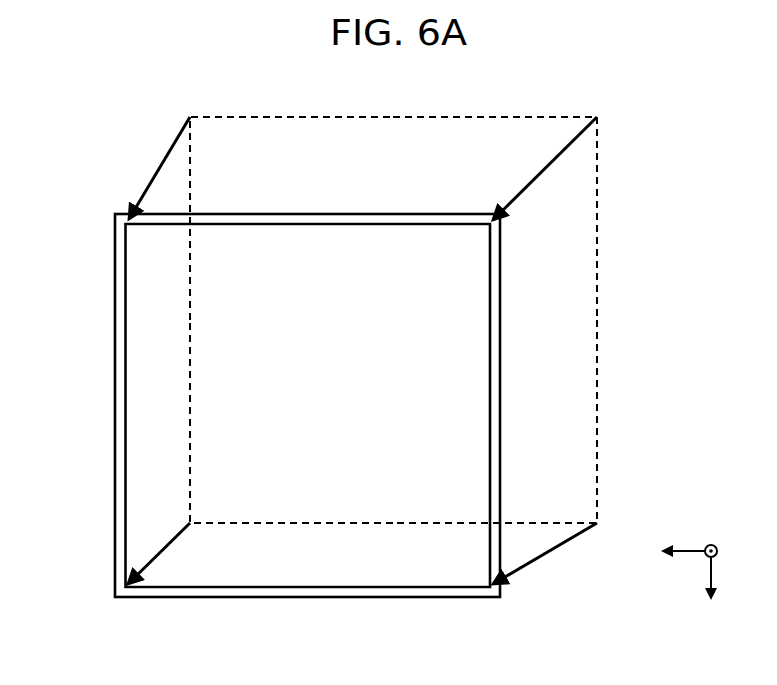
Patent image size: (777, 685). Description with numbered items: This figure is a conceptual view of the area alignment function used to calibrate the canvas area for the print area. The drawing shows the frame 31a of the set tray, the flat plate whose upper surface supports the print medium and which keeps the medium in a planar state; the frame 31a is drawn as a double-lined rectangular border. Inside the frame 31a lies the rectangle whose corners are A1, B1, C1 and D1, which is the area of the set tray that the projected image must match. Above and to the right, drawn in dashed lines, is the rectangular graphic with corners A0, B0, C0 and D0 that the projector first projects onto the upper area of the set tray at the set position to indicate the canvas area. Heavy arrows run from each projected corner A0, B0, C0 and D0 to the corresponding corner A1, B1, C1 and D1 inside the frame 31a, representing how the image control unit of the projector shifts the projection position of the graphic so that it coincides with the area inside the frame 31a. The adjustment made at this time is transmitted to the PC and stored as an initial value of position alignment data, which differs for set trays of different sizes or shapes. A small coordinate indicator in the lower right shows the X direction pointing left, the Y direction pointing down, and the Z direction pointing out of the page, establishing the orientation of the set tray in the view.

The frame 31a is at (119, 463).
The corner of projected rectangular graphic A0 is at (261, 205).
The corner of projected rectangular graphic B0 is at (510, 205).
The corner of projected rectangular graphic C0 is at (510, 452).
The corner of projected rectangular graphic D0 is at (260, 452).
The corner of area inside frame A1 is at (217, 314).
The corner of area inside frame B1 is at (399, 314).
The corner of area inside frame C1 is at (399, 496).
The corner of area inside frame D1 is at (212, 513).
The X axis X is at (672, 551).
The Y axis Y is at (709, 592).
The Z axis Z is at (719, 542).